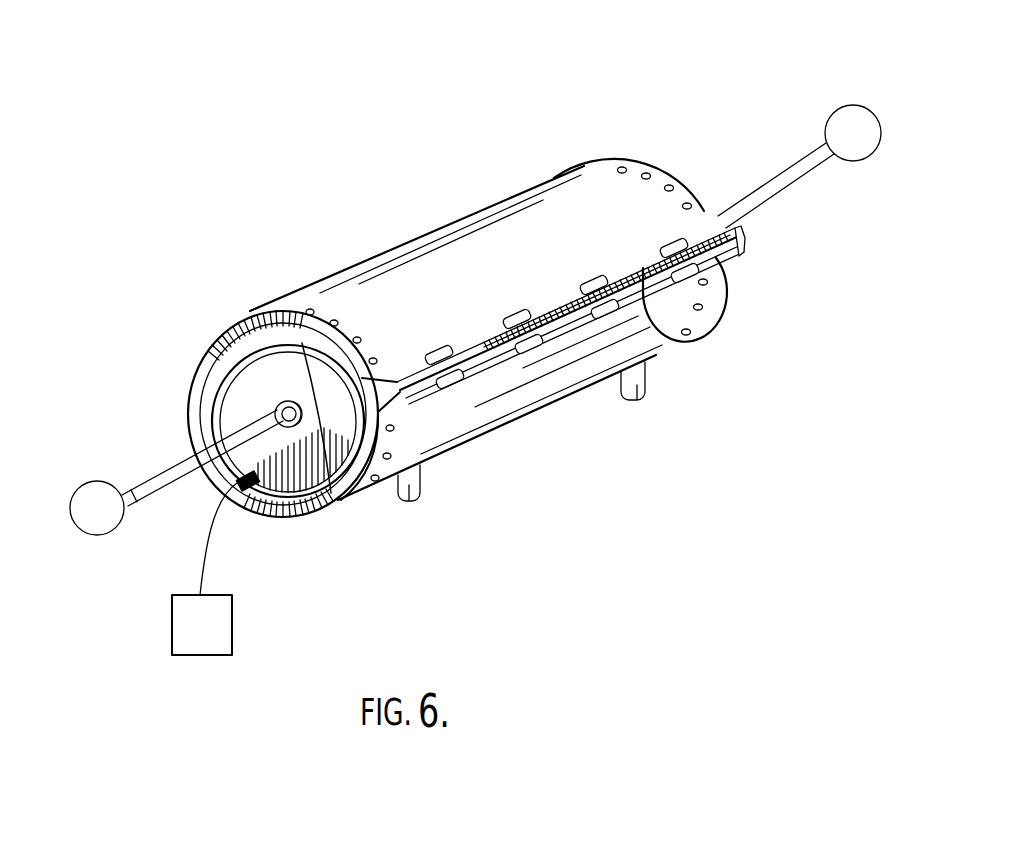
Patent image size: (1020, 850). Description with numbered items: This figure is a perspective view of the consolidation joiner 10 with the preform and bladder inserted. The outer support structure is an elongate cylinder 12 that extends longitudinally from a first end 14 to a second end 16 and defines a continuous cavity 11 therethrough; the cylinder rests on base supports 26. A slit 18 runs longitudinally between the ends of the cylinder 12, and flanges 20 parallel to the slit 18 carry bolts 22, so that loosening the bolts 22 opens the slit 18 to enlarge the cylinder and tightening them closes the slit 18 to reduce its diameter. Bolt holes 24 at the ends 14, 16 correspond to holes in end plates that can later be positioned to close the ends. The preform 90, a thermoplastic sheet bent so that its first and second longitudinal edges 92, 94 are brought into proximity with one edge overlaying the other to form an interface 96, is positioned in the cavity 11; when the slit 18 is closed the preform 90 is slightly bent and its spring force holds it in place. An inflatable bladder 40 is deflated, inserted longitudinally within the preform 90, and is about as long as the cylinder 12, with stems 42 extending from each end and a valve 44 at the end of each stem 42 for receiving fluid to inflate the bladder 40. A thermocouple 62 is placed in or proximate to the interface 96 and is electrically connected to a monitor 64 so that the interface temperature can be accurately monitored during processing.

The consolidation joiner 10 is at (268, 137).
The cavity 11 is at (206, 418).
The elongate cylinder 12 is at (464, 213).
The first end 14 is at (198, 383).
The second end 16 is at (658, 156).
The slit 18 is at (757, 214).
The flanges 20 is at (700, 340).
The bolts 22 is at (602, 300).
The bolt holes 24 is at (334, 320).
The base supports 26 is at (423, 483).
The inflatable bladder 40 is at (278, 517).
The stem 42 is at (148, 473).
The valve 44 is at (72, 518).
The thermocouple 62 is at (237, 482).
The monitor 64 is at (196, 657).
The preform 90 is at (207, 347).
The first longitudinal edge 92 is at (293, 308).
The second longitudinal edge 94 is at (331, 493).
The interface 96 is at (320, 345).